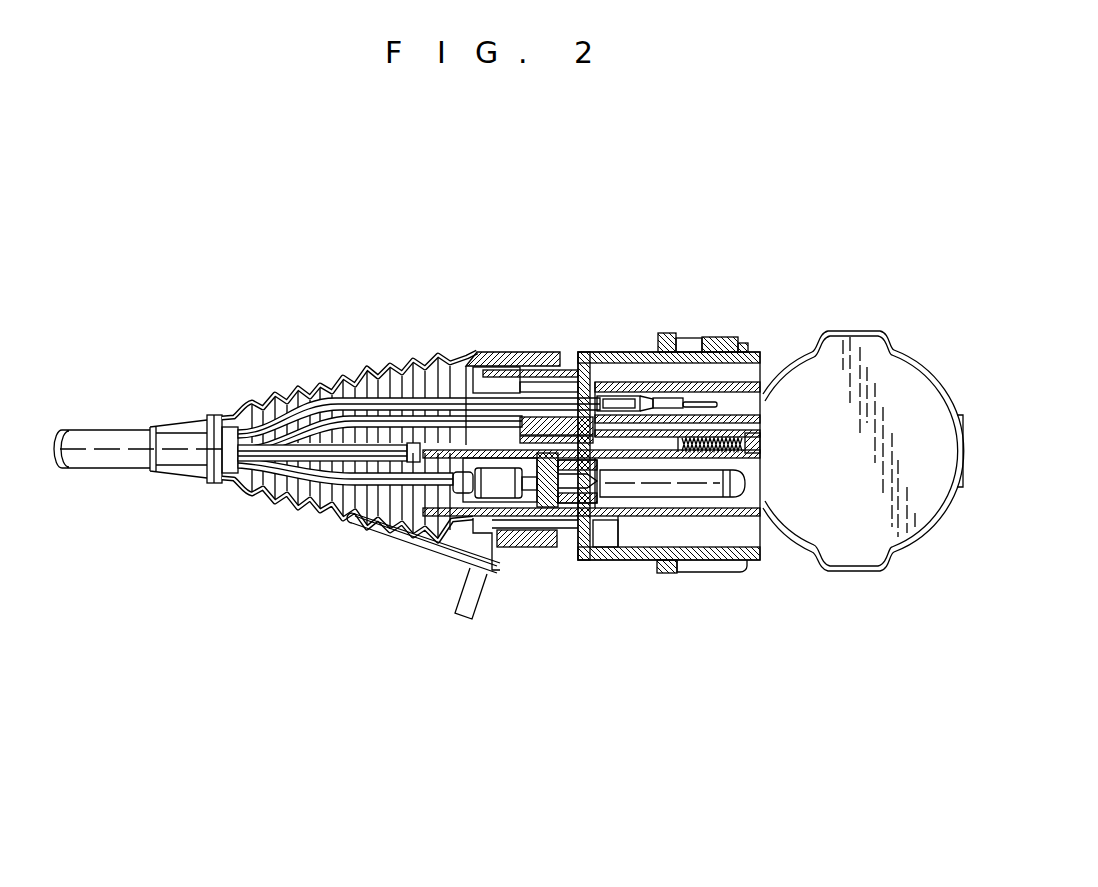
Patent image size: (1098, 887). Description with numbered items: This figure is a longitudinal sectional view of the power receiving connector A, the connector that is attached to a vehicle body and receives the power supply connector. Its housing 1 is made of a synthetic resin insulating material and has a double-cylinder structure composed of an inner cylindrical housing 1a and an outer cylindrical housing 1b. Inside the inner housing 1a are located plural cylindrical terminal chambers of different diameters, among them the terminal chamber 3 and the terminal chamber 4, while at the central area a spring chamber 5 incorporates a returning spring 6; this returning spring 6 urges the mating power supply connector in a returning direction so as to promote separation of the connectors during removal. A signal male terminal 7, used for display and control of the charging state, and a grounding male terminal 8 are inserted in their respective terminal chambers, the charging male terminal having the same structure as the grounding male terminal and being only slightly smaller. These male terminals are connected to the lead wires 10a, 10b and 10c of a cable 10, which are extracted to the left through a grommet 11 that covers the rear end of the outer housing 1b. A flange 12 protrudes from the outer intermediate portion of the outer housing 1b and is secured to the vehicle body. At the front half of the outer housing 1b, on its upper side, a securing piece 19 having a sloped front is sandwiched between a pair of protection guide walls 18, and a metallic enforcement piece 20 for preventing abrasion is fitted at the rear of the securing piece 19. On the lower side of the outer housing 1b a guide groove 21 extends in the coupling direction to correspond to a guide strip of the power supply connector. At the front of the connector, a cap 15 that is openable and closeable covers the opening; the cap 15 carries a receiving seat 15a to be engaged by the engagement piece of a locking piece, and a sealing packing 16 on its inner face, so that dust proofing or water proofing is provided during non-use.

The cable 10 is at (97, 437).
The lead wire 10a is at (310, 453).
The lead wire 10b is at (378, 393).
The lead wire 10c is at (350, 488).
The grommet 11 is at (287, 398).
The power receiving connector A is at (559, 258).
The housing 1 is at (603, 352).
The inner cylindrical housing 1a is at (602, 560).
The outer cylindrical housing 1b is at (570, 360).
The terminal chamber 3 is at (765, 412).
The terminal chamber 4 is at (748, 502).
The spring chamber 5 is at (765, 433).
The returning spring 6 is at (765, 444).
The signal male terminal 7 is at (717, 403).
The grounding male terminal 8 is at (698, 488).
The flange 12 is at (659, 333).
The protection guide walls 18 is at (690, 338).
The securing piece 19 is at (750, 352).
The metallic enforcement piece 20 is at (710, 340).
The guide groove 21 is at (740, 545).
The cap 15 is at (917, 357).
The receiving seat 15a is at (964, 450).
The sealing packing 16 is at (910, 493).